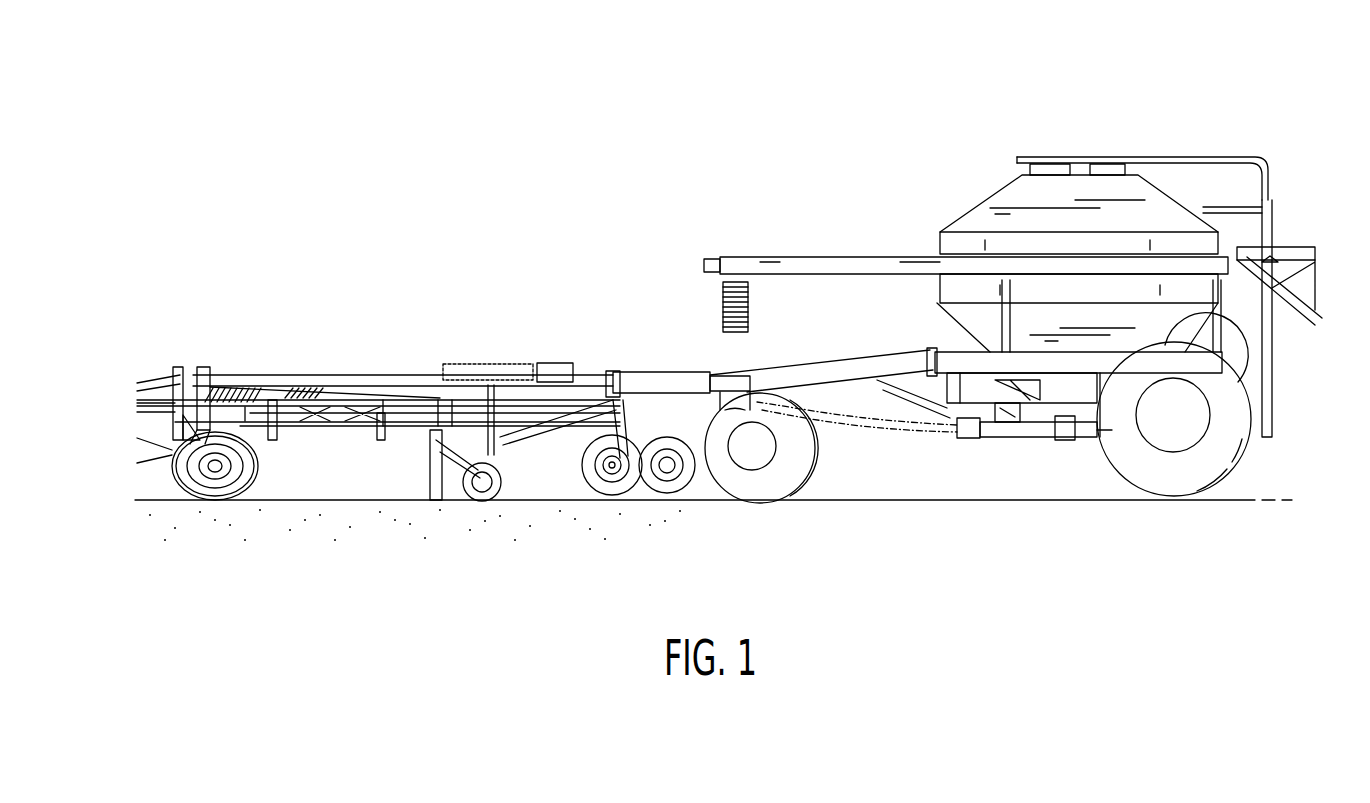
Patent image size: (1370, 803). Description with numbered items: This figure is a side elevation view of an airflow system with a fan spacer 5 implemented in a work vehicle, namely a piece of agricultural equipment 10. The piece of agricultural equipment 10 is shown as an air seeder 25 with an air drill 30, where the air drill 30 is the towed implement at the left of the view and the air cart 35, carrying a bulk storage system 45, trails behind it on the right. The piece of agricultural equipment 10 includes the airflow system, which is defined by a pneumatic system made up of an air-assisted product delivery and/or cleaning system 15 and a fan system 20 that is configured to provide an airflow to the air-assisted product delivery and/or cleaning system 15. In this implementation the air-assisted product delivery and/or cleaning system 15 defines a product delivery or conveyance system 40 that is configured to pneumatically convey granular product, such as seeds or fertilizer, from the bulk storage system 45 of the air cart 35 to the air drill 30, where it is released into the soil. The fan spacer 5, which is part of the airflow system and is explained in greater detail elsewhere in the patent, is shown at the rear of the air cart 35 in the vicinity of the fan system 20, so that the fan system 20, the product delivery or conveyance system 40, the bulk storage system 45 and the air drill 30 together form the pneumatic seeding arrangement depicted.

The piece of agricultural equipment 10 is at (762, 88).
The fan spacer 5 is at (1274, 398).
The air-assisted product delivery and/or cleaning system 15 is at (515, 358).
The fan system 20 is at (1232, 350).
The air seeder 25 is at (468, 210).
The air drill 30 is at (360, 342).
The air cart 35 is at (980, 130).
The product delivery or conveyance system 40 is at (1010, 440).
The bulk storage system 45 is at (965, 185).